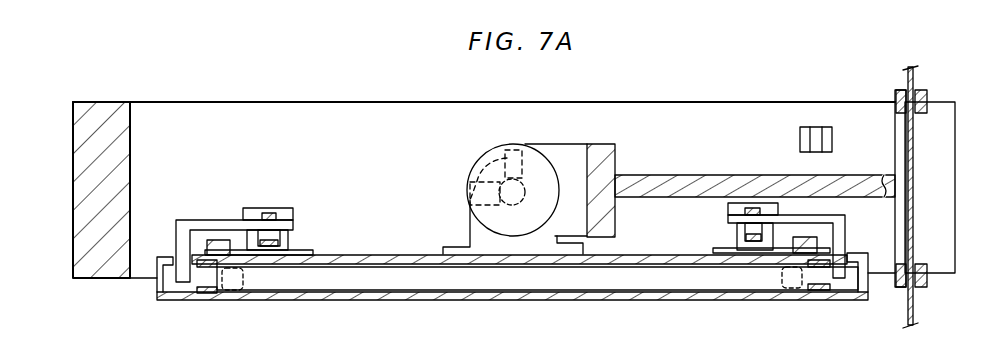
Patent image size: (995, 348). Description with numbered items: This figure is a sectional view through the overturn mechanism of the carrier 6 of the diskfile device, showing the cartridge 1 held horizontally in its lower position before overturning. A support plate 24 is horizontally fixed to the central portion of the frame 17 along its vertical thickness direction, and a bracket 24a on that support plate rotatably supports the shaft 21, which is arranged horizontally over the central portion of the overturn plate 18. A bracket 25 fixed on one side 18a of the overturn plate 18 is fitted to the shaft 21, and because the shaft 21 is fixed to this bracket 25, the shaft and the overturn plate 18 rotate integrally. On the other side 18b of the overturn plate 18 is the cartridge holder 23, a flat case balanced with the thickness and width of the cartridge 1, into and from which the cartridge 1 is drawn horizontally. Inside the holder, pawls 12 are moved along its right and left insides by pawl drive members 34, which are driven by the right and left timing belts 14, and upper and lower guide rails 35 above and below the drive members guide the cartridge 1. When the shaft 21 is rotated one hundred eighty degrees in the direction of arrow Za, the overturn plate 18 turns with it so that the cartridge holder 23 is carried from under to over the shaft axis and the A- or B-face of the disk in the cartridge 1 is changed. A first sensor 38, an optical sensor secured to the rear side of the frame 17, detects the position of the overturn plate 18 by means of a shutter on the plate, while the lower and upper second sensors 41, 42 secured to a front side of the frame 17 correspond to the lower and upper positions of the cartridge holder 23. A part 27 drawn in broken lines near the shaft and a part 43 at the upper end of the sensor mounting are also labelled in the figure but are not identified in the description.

The cartridge 1 is at (680, 278).
The carrier 6 is at (294, 96).
The pawls 12 is at (235, 290).
The timing belts 14 is at (268, 216).
The frame 17 is at (120, 108).
The overturn plate 18 is at (352, 256).
The one side of the overturn plate 18a is at (388, 222).
The other side of the overturn plate 18b is at (390, 298).
The shaft 21 is at (499, 194).
The cartridge holder 23 is at (428, 288).
The support plate 24 is at (703, 182).
The bracket 24a is at (565, 157).
The bracket 25 is at (470, 232).
The link 27 is at (507, 152).
The pawl drive member 34 is at (190, 228).
The guide rails 35 is at (202, 268).
The first sensor 38 is at (808, 127).
The lower second sensor 41 is at (913, 300).
The upper second sensor 42 is at (920, 96).
The rod end 43 is at (913, 70).
The arrow Za is at (447, 95).